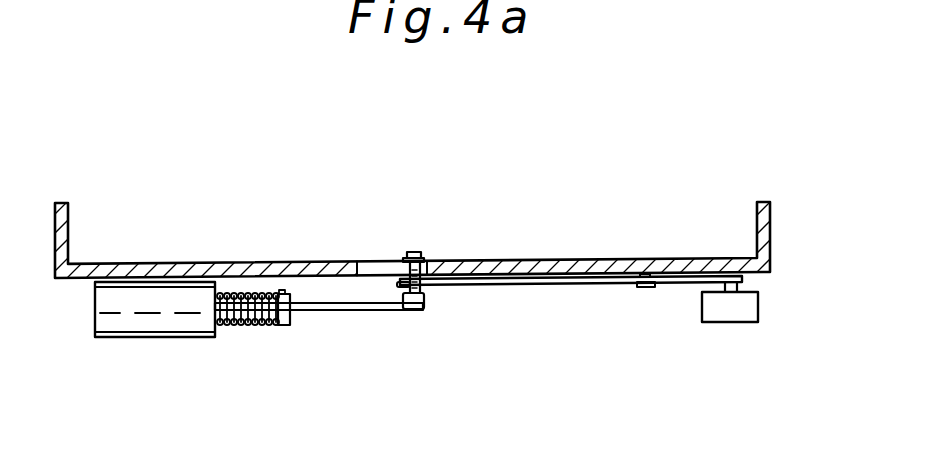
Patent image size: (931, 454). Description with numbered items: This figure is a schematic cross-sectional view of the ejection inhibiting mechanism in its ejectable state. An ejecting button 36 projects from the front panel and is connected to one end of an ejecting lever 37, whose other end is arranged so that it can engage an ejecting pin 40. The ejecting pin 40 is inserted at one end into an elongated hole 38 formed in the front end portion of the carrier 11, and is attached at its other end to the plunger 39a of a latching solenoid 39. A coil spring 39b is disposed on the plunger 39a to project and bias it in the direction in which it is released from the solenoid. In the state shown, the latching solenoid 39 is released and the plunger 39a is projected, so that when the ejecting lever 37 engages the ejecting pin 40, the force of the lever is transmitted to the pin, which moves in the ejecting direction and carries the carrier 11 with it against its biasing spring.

The carrier 11 is at (580, 260).
The ejecting button 36 is at (758, 300).
The ejecting lever 37 is at (577, 286).
The elongated hole 38 is at (385, 261).
The latching solenoid 39 is at (168, 323).
The plunger 39a is at (281, 326).
The coil spring 39b is at (238, 326).
The ejecting pin 40 is at (388, 280).